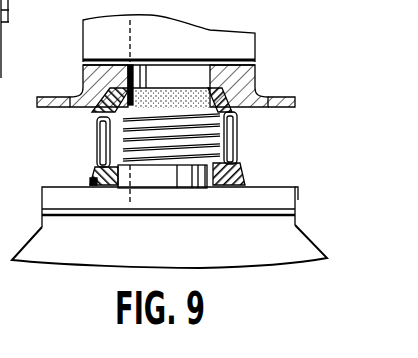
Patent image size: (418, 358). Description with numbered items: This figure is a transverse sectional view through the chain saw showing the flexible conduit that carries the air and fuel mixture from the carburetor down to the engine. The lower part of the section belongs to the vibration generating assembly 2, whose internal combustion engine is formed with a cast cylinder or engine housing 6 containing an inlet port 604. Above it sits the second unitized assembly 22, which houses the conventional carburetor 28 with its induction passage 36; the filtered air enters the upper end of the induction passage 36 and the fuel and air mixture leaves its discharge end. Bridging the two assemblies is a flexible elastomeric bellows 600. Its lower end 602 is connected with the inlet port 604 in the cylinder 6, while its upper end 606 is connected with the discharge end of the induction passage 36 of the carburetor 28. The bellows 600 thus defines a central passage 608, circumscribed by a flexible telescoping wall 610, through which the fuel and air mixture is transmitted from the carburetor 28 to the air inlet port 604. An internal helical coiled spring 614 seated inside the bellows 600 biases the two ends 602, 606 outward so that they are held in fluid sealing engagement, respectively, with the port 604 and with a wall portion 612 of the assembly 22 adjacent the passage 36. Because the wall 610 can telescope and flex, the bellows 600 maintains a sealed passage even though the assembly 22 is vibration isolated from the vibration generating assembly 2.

The vibration generating assembly 2 is at (75, 252).
The engine housing 6 is at (296, 233).
The second unitized assembly 22 is at (250, 72).
The carburetor 28 is at (255, 48).
The induction passage 36 is at (194, 40).
The bellows 600 is at (98, 148).
The lower end 602 is at (240, 165).
The inlet port 604 is at (193, 197).
The upper end 606 is at (220, 100).
The central passage 608 is at (180, 108).
The flexible telescoping wall 610 is at (238, 135).
The wall portion 612 is at (53, 104).
The coiled spring 614 is at (196, 111).